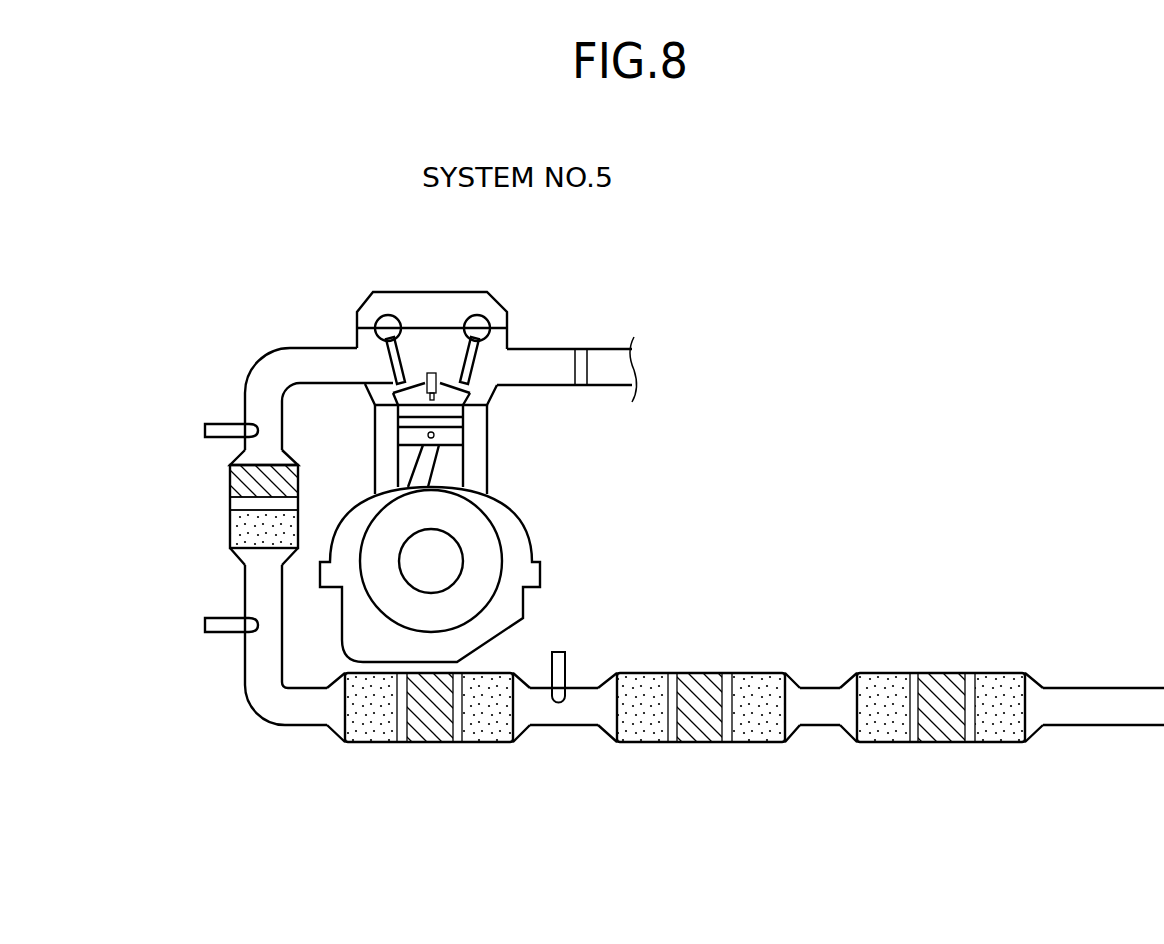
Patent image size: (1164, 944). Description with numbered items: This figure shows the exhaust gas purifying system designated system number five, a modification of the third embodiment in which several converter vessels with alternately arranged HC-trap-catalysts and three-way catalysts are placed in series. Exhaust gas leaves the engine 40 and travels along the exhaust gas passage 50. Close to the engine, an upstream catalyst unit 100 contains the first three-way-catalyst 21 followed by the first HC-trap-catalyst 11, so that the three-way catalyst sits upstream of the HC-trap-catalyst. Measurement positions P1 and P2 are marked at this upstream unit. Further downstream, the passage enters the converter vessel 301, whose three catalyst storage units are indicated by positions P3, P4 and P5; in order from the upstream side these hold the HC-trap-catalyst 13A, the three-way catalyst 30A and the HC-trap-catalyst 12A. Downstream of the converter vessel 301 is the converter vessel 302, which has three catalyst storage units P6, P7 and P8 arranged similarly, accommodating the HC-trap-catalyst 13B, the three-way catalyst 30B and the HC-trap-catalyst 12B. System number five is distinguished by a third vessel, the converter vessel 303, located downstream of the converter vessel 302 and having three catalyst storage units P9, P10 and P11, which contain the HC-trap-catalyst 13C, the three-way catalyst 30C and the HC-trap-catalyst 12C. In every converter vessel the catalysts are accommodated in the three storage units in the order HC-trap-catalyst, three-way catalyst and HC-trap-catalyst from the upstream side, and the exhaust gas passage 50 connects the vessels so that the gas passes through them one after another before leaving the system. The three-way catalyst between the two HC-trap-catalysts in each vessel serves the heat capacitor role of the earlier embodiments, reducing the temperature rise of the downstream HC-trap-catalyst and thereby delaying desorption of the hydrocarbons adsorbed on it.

The engine 40 is at (435, 295).
The intake-side catalyst unit 100 is at (152, 458).
The first three-way-catalyst 21 is at (233, 488).
The first HC-trap-catalyst 11 is at (247, 535).
The converter vessel 301 is at (538, 810).
The converter vessel 302 is at (805, 810).
The converter vessel 303 is at (1062, 812).
The first catalyst element of unit 301 13A is at (368, 727).
The filter of unit 301 30A is at (430, 727).
The second catalyst element of unit 301 12A is at (490, 727).
The first catalyst element of unit 302 13B is at (645, 728).
The filter of unit 302 30B is at (705, 728).
The second catalyst element of unit 302 12B is at (758, 728).
The first catalyst element of unit 303 13C is at (892, 728).
The filter of unit 303 30C is at (953, 728).
The second catalyst element of unit 303 12C is at (1015, 728).
The exhaust gas passage 50 is at (820, 688).
The measurement point P1 is at (305, 475).
The measurement point P2 is at (305, 530).
The measurement point P3 is at (372, 673).
The measurement point P4 is at (450, 673).
The measurement point P5 is at (497, 673).
The catalyst storage unit P6 is at (642, 675).
The catalyst storage unit P7 is at (697, 675).
The catalyst storage unit P8 is at (748, 675).
The catalyst storage unit P9 is at (890, 675).
The catalyst storage unit P10 is at (945, 675).
The catalyst storage unit P11 is at (1003, 675).